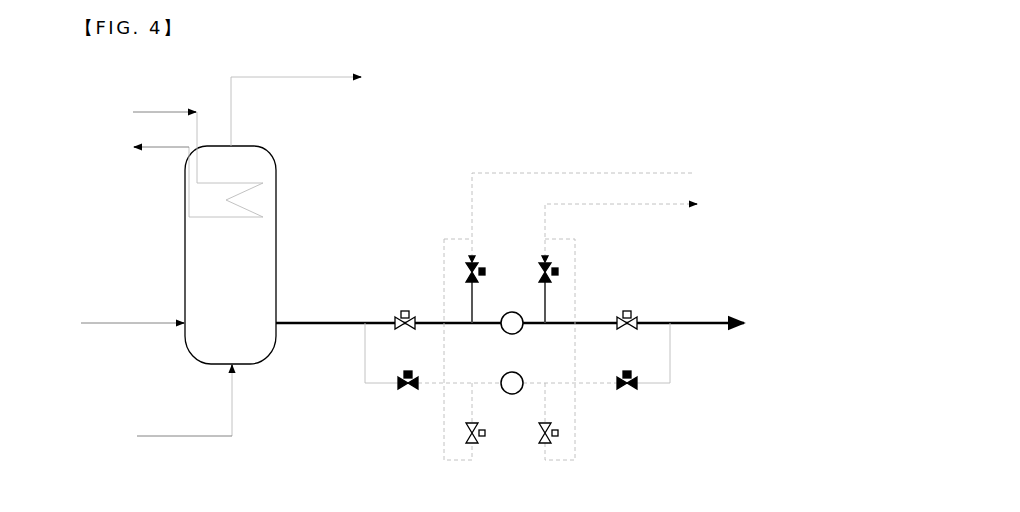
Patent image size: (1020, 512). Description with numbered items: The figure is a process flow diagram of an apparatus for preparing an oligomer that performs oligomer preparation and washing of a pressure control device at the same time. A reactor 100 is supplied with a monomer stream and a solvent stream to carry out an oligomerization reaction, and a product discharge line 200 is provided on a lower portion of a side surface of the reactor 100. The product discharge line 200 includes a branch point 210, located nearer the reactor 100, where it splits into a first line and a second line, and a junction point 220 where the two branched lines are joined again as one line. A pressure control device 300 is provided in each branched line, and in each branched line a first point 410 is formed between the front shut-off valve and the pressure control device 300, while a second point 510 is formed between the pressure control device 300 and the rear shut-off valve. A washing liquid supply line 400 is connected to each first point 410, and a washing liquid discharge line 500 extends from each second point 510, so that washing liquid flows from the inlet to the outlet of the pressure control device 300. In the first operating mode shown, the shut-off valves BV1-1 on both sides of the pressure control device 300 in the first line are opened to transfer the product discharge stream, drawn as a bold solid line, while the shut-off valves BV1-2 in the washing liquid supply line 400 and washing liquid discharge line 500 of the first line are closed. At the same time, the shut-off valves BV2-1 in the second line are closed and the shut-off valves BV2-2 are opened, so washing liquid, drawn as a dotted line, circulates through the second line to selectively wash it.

The reactor 100 is at (221, 256).
The product discharge line 200 is at (725, 336).
The branch point 210 is at (364, 324).
The junction point 220 is at (672, 325).
The pressure control device 300 is at (522, 333).
The washing liquid supply line 400 is at (509, 173).
The first point 410 is at (472, 383).
The washing liquid discharge line 500 is at (640, 204).
The second point 510 is at (547, 383).
The 1-1-th shut-off valve BV1-1 is at (406, 332).
The 1-2-th shut-off valve BV1-2 is at (472, 258).
The 2-1-th shut-off valve BV2-1 is at (401, 392).
The 2-2-th shut-off valve BV2-2 is at (545, 445).